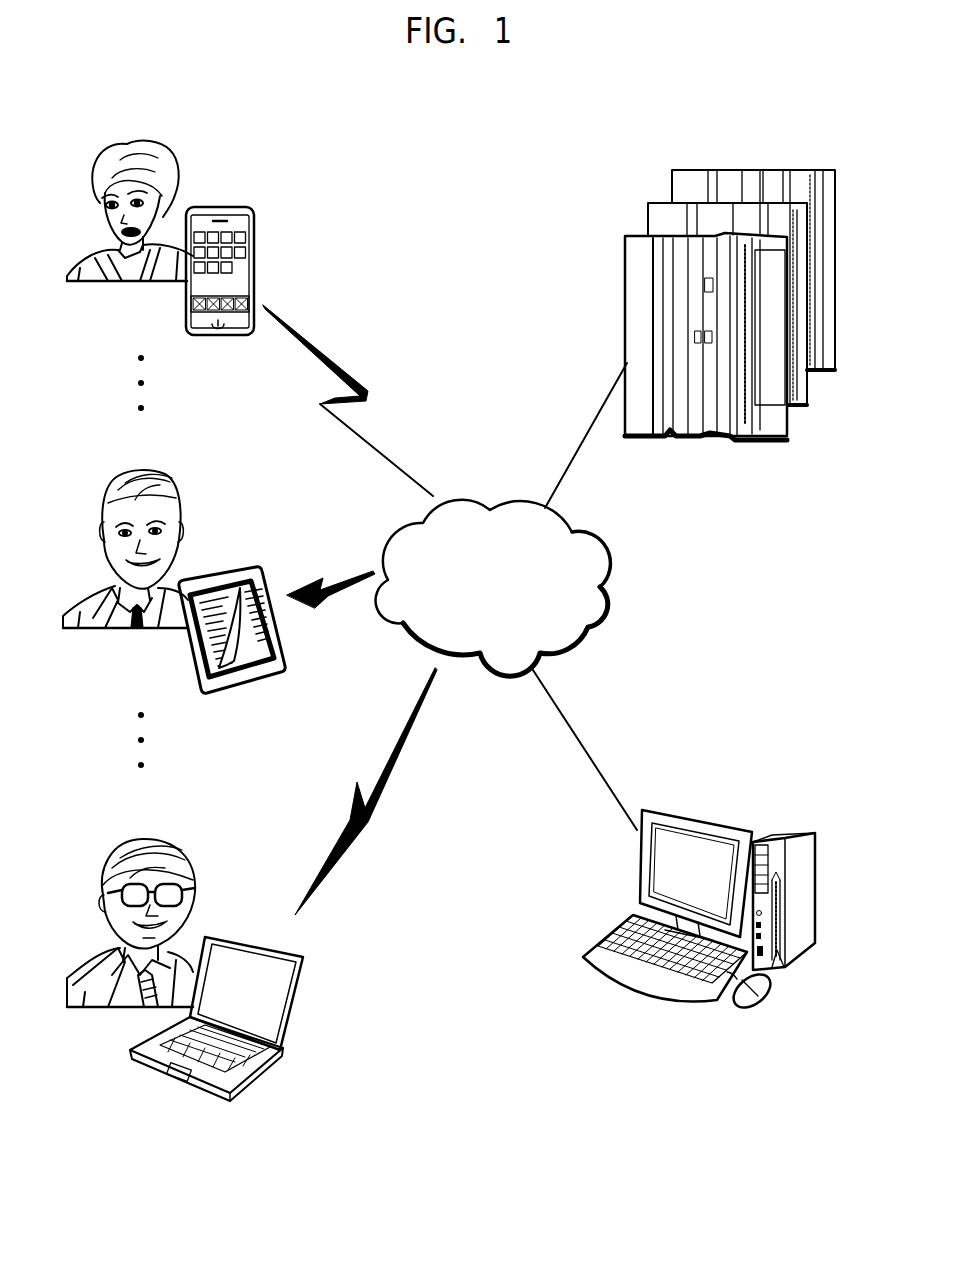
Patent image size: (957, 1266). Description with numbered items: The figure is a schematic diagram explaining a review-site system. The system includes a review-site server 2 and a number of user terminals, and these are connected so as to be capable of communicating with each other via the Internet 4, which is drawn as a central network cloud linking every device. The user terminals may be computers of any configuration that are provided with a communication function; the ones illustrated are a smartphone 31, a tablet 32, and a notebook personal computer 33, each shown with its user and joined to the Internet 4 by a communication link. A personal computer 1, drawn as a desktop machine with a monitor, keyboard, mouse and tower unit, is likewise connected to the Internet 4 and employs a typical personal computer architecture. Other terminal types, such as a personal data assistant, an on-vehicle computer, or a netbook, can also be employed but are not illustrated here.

The personal computer 1 is at (786, 836).
The review-site server 2 is at (625, 277).
The Internet 4 is at (502, 594).
The smartphone 31 is at (250, 238).
The tablet 32 is at (243, 570).
The notebook personal computer 33 is at (297, 992).